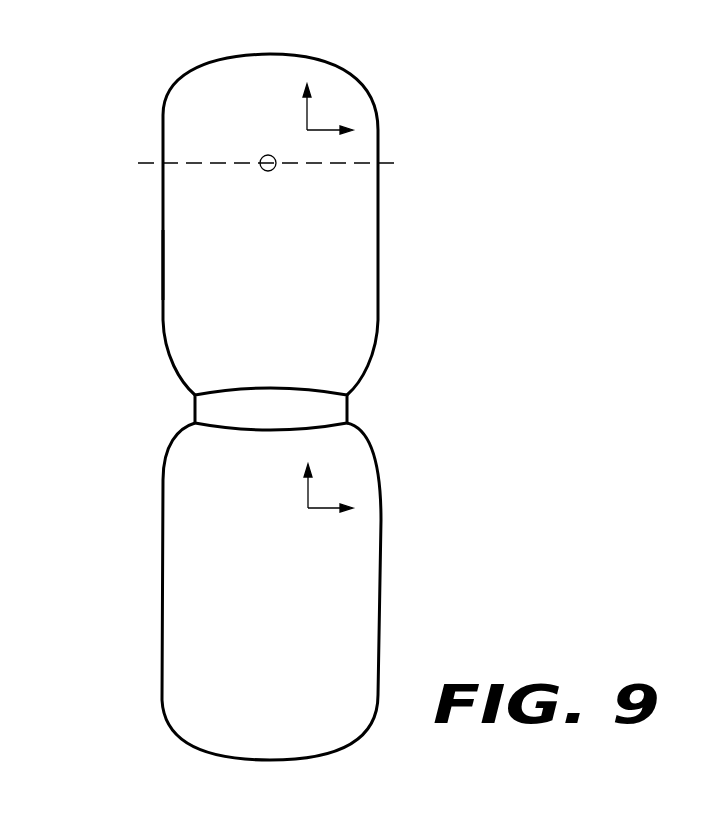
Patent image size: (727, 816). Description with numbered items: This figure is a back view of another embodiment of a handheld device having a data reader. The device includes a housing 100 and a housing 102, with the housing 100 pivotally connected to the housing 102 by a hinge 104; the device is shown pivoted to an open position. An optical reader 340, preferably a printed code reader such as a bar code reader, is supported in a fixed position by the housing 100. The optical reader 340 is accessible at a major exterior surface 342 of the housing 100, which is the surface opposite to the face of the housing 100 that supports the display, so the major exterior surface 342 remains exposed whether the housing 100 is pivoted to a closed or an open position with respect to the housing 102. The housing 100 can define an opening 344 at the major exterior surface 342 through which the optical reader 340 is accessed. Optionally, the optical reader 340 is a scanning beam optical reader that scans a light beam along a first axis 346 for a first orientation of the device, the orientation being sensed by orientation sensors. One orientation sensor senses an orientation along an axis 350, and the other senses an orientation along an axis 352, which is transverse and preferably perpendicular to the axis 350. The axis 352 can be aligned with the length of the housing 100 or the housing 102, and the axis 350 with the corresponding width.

The housing 100 is at (382, 256).
The housing 102 is at (383, 553).
The hinge 104 is at (350, 400).
The optical reader 340 is at (273, 170).
The major exterior surface 342 is at (190, 258).
The opening 344 is at (263, 170).
The first axis 346 is at (392, 160).
The axis 350 is at (322, 128).
The axis 352 is at (305, 108).